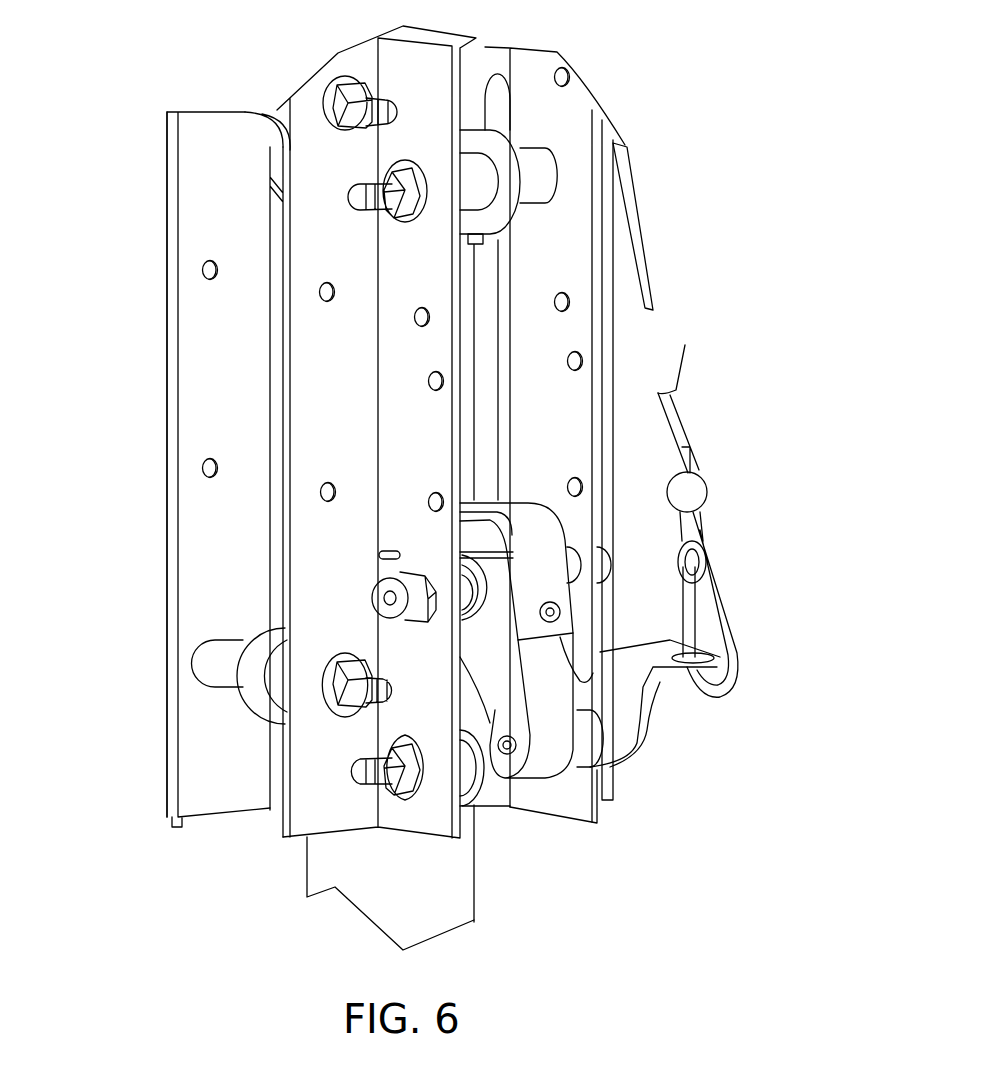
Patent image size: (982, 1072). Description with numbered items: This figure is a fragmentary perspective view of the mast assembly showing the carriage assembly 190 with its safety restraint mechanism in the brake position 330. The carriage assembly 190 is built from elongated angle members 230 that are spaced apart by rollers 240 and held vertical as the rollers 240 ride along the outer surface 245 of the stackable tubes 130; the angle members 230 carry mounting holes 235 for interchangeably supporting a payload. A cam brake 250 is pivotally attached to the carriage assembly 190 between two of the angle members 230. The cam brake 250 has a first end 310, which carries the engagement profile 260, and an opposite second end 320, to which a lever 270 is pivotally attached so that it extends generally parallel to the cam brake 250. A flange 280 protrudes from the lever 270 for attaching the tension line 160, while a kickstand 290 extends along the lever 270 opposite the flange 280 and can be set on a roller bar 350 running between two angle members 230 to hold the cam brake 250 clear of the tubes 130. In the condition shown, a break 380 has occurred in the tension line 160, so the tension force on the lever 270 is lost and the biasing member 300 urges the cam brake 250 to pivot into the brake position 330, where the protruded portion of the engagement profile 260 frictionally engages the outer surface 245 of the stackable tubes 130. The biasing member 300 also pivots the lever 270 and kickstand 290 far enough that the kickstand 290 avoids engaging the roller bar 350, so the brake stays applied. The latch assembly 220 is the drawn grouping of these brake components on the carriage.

The stackable tubes 130 is at (312, 880).
The tension line 160 is at (637, 228).
The carriage assembly 190 is at (152, 759).
The latch assembly 220 is at (658, 798).
The elongated angle members 230 is at (188, 337).
The mounting holes 235 is at (203, 269).
The rollers 240 is at (255, 700).
The outer surface 245 is at (465, 900).
The cam brake 250 is at (507, 605).
The engagement profile 260 is at (468, 490).
The lever 270 is at (625, 742).
The flange 280 is at (690, 677).
The kickstand 290 is at (585, 655).
The biasing member 300 is at (465, 556).
The first end 310 is at (488, 530).
The second end 320 is at (545, 790).
The brake position 330 is at (750, 590).
The roller bar 350 is at (470, 772).
The break 380 is at (653, 310).